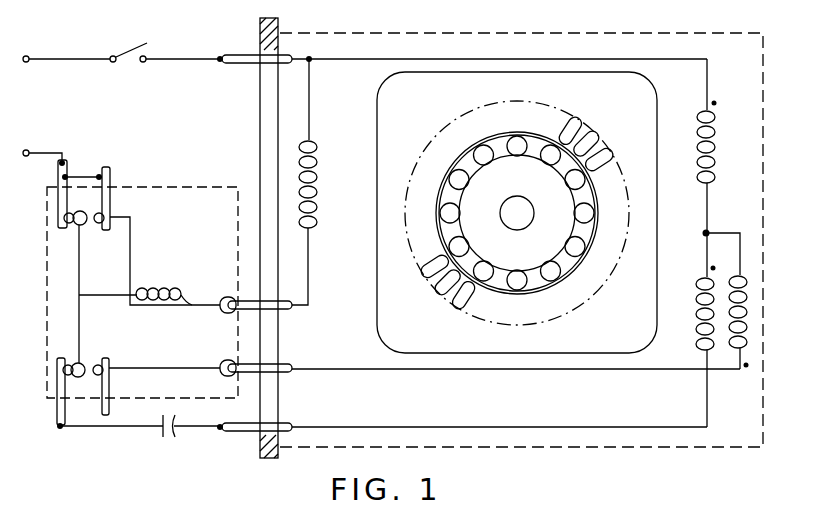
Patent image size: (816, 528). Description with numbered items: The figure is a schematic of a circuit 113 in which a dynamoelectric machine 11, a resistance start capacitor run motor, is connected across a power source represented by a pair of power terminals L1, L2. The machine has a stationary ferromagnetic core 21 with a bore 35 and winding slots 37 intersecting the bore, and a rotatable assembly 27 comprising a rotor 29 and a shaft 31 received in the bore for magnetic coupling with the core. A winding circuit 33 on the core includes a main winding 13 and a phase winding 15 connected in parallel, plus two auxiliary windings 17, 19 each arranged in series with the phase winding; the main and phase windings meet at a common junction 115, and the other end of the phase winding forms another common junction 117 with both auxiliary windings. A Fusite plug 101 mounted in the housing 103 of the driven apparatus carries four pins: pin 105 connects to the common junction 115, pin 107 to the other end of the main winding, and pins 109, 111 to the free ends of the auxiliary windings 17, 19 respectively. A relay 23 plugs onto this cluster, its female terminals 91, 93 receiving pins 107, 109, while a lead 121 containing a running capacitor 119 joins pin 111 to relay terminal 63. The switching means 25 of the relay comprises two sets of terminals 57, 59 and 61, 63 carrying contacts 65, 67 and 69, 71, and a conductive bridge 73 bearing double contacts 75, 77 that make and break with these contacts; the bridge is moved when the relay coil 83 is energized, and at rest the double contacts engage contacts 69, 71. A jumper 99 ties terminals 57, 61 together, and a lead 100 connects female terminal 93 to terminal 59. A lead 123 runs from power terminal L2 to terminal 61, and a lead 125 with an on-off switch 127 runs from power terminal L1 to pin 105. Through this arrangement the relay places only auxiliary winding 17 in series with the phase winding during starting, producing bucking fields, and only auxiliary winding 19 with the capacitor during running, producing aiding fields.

The dynamoelectric machine 11 is at (717, 70).
The main winding 13 is at (320, 174).
The phase winding 15 is at (715, 145).
The auxiliary winding 17 is at (746, 338).
The auxiliary winding 19 is at (696, 317).
The ferromagnetic core 21 is at (377, 240).
The relay 23 is at (43, 378).
The switching means 25 is at (436, 179).
The rotatable assembly 27 is at (572, 268).
The rotor 29 is at (593, 233).
The shaft 31 is at (508, 231).
The winding circuit 33 is at (715, 383).
The bore 35 is at (532, 130).
The winding slots 37 is at (574, 113).
The terminal 57 is at (110, 172).
The terminal 59 is at (110, 408).
The terminal 61 is at (58, 175).
The terminal 63 is at (58, 426).
The contact 65 is at (99, 223).
The contact 67 is at (100, 360).
The contact 69 is at (62, 220).
The contact 71 is at (56, 363).
The bridge 73 is at (77, 310).
The double contact 75 is at (83, 226).
The double contact 77 is at (83, 364).
The relay coil 83 is at (158, 288).
The female terminal 91 is at (220, 313).
The female terminal 93 is at (219, 377).
The jumper 99 is at (88, 176).
The lead 100 is at (167, 366).
The Fusite plug 101 is at (258, 120).
The housing 103 is at (266, 459).
The pin 105 is at (238, 53).
The pin 107 is at (285, 310).
The pin 109 is at (286, 374).
The pin 111 is at (286, 423).
The circuit 113 is at (567, 492).
The common junction 115 is at (311, 57).
The common junction 117 is at (705, 228).
The running capacitor 119 is at (168, 440).
The lead 121 is at (110, 428).
The lead 123 is at (56, 152).
The lead 125 is at (85, 60).
The on-off switch 127 is at (140, 45).
The power terminal L1 is at (26, 56).
The power terminal L2 is at (26, 150).